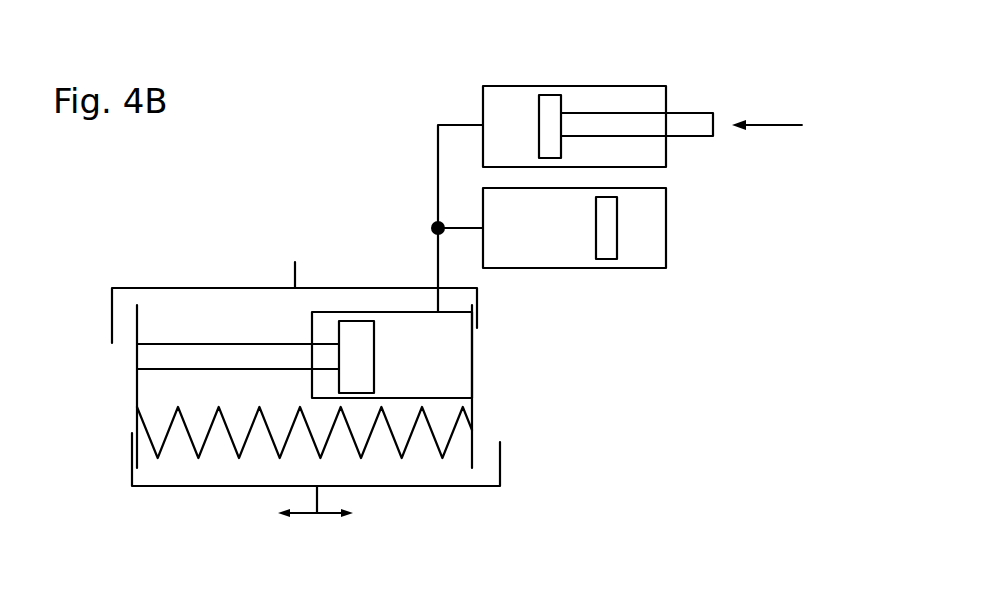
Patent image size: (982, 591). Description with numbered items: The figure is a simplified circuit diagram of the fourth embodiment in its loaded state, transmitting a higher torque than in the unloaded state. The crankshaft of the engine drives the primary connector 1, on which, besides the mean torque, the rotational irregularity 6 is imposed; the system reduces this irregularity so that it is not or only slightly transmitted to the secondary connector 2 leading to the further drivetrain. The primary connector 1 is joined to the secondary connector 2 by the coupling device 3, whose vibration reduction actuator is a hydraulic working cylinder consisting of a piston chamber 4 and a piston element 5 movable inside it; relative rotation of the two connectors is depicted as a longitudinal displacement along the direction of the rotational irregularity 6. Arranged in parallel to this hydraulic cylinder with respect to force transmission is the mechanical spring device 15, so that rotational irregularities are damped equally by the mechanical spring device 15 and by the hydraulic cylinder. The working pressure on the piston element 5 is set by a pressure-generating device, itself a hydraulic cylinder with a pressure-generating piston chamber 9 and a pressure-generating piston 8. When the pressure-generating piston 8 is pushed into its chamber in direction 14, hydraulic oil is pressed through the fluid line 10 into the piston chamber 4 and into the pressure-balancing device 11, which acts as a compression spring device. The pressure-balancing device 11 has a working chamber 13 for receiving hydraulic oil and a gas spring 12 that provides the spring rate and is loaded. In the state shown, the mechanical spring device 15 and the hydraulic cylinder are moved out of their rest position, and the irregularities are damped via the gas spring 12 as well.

The primary connector 1 is at (319, 489).
The secondary connector 2 is at (293, 266).
The coupling device 3 is at (474, 383).
The piston chamber 4 is at (448, 337).
The piston element 5 is at (153, 356).
The rotational irregularity 6 is at (303, 516).
The pressure-generating piston 8 is at (692, 112).
The pressure-generating piston chamber 9 is at (522, 105).
The fluid line 10 is at (437, 125).
The pressure-balancing device 11 is at (667, 208).
The gas spring 12 is at (650, 237).
The working chamber 13 is at (493, 252).
The direction 14 is at (768, 123).
The mechanical spring device 15 is at (188, 432).